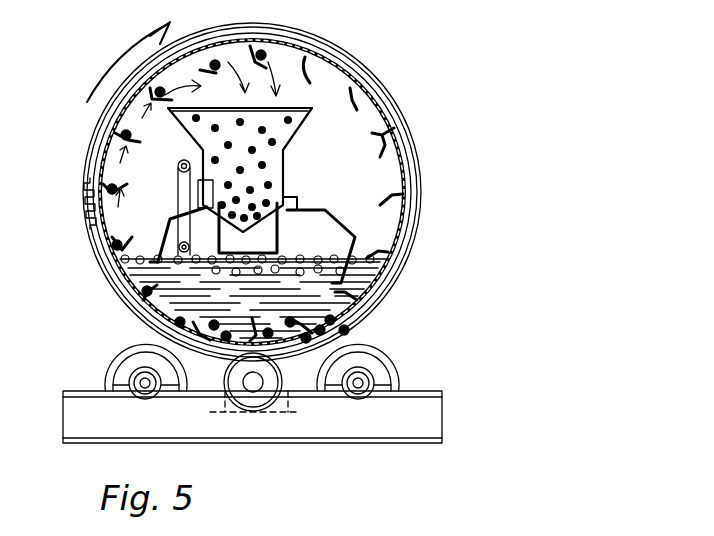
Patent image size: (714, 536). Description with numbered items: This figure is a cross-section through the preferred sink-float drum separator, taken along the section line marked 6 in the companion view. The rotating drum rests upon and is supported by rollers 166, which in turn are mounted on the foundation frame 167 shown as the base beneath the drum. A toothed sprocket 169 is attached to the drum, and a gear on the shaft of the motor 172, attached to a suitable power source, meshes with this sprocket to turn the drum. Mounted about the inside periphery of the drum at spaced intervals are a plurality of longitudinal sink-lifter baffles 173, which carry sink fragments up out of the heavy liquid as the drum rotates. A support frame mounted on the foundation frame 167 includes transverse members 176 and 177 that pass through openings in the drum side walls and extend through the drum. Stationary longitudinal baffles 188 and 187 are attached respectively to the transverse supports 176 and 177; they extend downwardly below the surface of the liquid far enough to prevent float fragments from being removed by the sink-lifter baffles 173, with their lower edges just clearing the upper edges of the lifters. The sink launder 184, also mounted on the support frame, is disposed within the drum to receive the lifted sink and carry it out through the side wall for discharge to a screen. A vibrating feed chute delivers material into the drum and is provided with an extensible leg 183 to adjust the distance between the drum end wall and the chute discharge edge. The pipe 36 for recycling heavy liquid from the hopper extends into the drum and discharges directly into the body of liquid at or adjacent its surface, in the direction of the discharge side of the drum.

The sink launder 184 is at (322, 104).
The sink-lifter baffles 173 is at (384, 135).
The pipe 36 is at (181, 160).
The transverse member 177 is at (199, 190).
The stationary longitudinal baffle 187 is at (160, 233).
The transverse member 176 is at (294, 193).
The stationary longitudinal baffle 188 is at (345, 221).
The extensible leg 183 is at (277, 244).
The toothed sprocket 169 is at (86, 203).
The rollers 166 is at (118, 358).
The motor 172 is at (273, 380).
The foundation frame 167 is at (412, 426).
The section line 6 is at (254, 0).